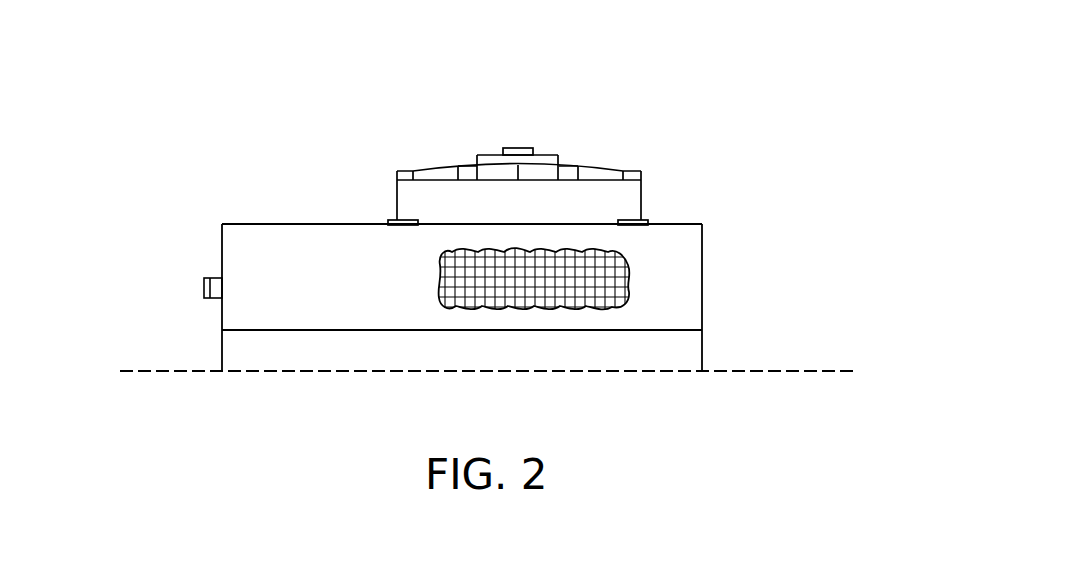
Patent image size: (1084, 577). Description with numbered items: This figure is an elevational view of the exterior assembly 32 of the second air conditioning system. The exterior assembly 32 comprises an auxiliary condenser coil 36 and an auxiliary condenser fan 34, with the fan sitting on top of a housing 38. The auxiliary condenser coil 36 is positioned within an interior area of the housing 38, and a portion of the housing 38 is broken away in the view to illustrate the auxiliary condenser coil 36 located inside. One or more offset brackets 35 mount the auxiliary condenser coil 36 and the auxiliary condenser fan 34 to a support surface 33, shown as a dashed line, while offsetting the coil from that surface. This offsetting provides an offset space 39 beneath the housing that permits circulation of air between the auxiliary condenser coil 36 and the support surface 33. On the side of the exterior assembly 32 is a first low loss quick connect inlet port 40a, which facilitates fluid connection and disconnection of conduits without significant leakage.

The exterior assembly 32 is at (764, 165).
The support surface 33 is at (813, 372).
The auxiliary condenser fan 34 is at (648, 164).
The offset brackets 35 is at (222, 352).
The auxiliary condenser coil 36 is at (626, 280).
The housing 38 is at (357, 330).
The offset space 39 is at (301, 352).
The first low loss quick connect inlet port 40a is at (204, 288).